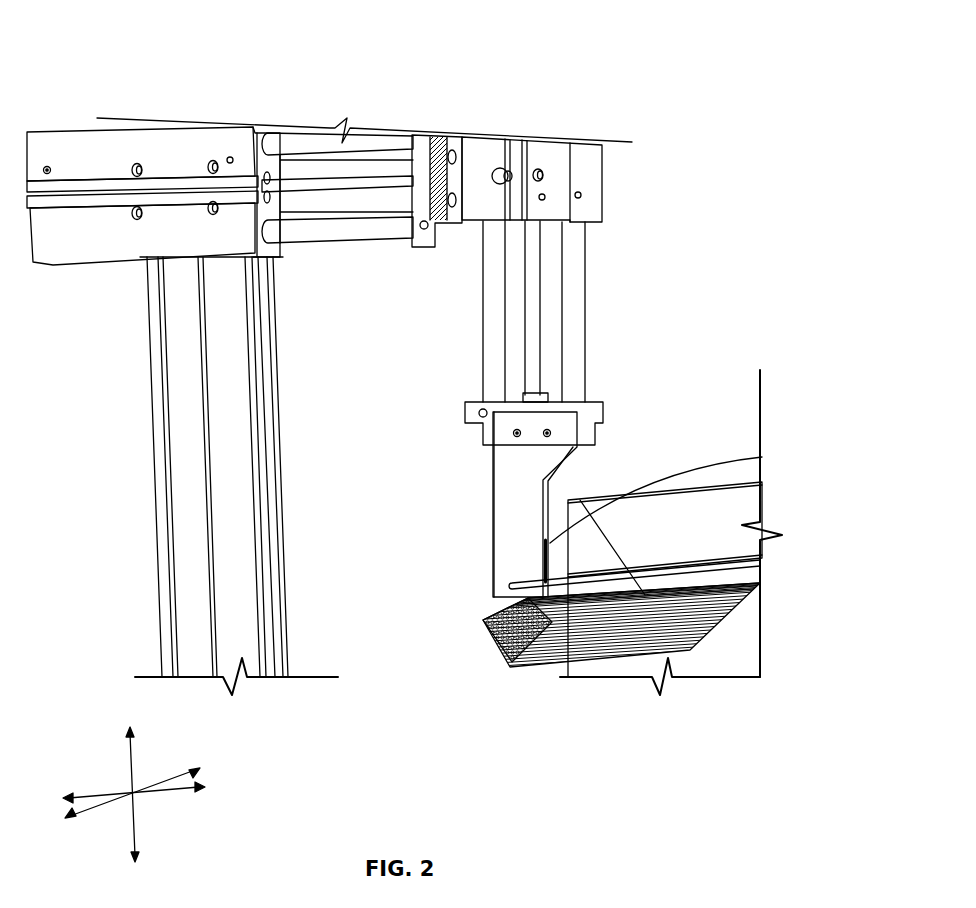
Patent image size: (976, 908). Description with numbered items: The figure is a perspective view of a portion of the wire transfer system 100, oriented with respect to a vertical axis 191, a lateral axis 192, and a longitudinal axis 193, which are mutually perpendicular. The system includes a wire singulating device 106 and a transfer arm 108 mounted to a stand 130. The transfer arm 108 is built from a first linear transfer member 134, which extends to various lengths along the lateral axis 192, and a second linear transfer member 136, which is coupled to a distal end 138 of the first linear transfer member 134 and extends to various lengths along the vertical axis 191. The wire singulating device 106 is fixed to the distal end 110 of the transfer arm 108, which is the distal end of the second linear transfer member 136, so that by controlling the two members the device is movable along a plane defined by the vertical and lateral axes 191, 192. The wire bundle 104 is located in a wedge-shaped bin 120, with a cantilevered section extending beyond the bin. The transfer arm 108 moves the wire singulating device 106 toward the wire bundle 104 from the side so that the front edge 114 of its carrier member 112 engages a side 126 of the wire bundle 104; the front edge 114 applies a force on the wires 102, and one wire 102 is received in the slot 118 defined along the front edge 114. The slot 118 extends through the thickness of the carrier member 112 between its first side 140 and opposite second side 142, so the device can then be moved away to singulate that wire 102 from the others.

The wire transfer system 100 is at (553, 74).
The wire 102 is at (683, 567).
The wire bundle 104 is at (627, 663).
The wire singulating device 106 is at (518, 493).
The transfer arm 108 is at (609, 182).
The distal end 110 is at (606, 421).
The carrier member 112 is at (515, 548).
The front edge 114 is at (762, 458).
The slot 118 is at (537, 582).
The bin 120 is at (628, 492).
The side of the wire bundle 126 is at (483, 621).
The stand 130 is at (185, 425).
The first linear transfer member 134 is at (325, 230).
The second linear transfer member 136 is at (575, 305).
The distal end of the first linear transfer member 138 is at (431, 137).
The first side 140 is at (550, 493).
The second side 142 is at (512, 524).
The vertical axis 191 is at (131, 765).
The lateral axis 192 is at (162, 795).
The longitudinal axis 193 is at (153, 780).